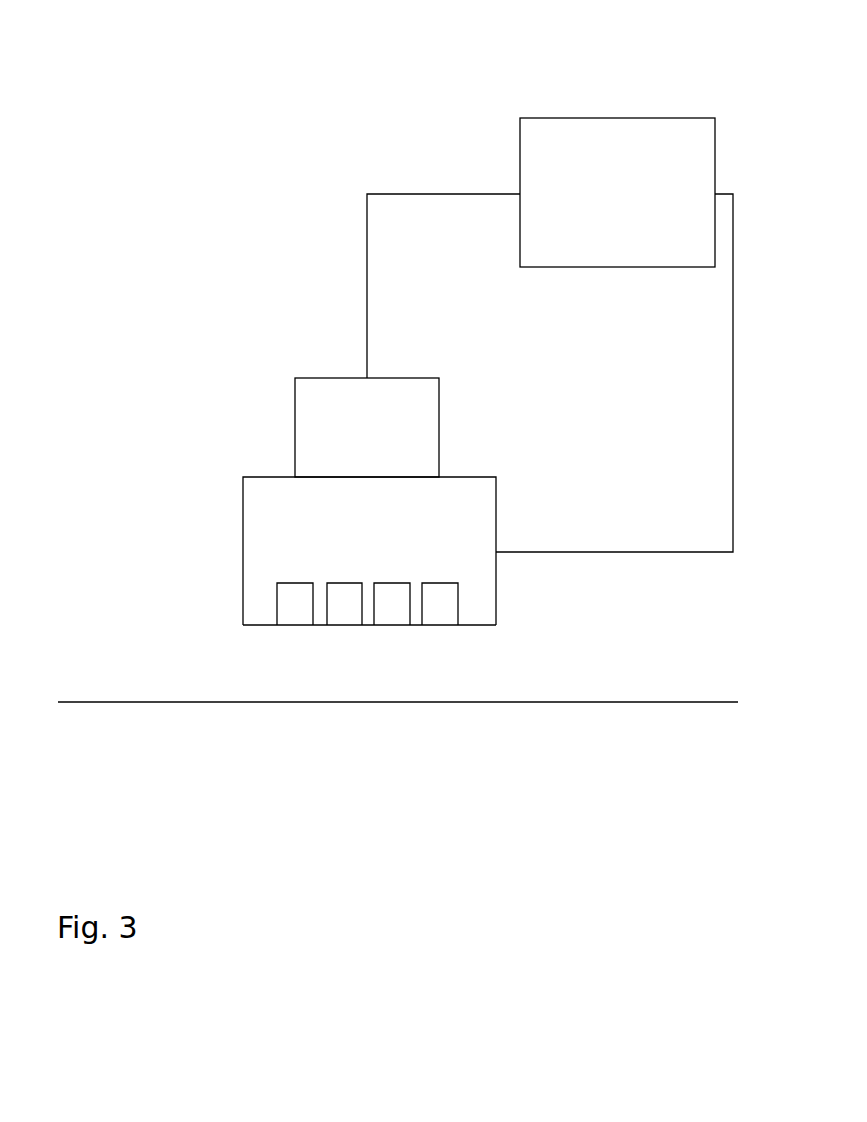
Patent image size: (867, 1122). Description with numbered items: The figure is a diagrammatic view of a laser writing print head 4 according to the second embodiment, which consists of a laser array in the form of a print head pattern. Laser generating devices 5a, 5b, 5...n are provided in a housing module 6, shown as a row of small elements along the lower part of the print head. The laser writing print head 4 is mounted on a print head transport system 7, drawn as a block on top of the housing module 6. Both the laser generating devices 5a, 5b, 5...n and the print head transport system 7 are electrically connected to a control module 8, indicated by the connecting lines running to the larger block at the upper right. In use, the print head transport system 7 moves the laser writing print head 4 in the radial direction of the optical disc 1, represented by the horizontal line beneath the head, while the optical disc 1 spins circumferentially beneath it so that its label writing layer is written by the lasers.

The optical disc 1 is at (666, 690).
The laser writing print head 4 is at (228, 524).
The laser generating device 5a is at (277, 607).
The laser generating device 5b is at (332, 610).
The laser generating devices 5...n is at (450, 603).
The housing module 6 is at (488, 596).
The print head transport system 7 is at (439, 390).
The control module 8 is at (618, 118).